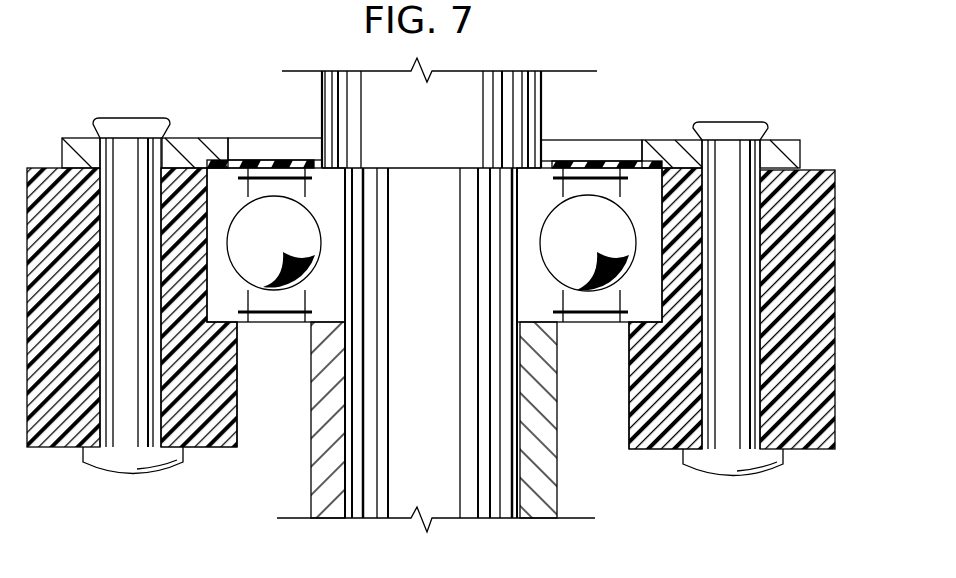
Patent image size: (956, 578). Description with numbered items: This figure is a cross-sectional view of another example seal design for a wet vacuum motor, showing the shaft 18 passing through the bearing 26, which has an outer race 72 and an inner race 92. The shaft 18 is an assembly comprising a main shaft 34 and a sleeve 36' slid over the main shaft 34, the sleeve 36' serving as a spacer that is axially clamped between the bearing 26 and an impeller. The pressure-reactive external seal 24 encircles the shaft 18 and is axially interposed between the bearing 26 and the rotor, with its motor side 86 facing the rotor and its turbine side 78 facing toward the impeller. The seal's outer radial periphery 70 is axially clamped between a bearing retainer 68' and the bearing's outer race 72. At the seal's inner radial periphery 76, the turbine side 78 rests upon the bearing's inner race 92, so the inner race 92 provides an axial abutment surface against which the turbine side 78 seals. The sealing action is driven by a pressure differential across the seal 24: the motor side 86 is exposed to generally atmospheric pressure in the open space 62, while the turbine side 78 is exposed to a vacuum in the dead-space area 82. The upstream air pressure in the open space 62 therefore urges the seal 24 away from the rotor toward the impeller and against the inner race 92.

The shaft 18 is at (542, 92).
The pressure-reactive external seal 24 is at (251, 160).
The bearing 26 is at (585, 323).
The main shaft 34 is at (346, 428).
The sleeve 36' is at (594, 420).
The open space 62 is at (581, 124).
The bearing retainer 68' is at (122, 263).
The outer radial periphery 70 is at (200, 160).
The outer race 72 is at (215, 323).
The inner radial periphery 76 is at (328, 164).
The turbine side 78 is at (259, 165).
The dead-space area 82 is at (288, 397).
The motor side 86 is at (288, 160).
The inner race 92 is at (332, 200).